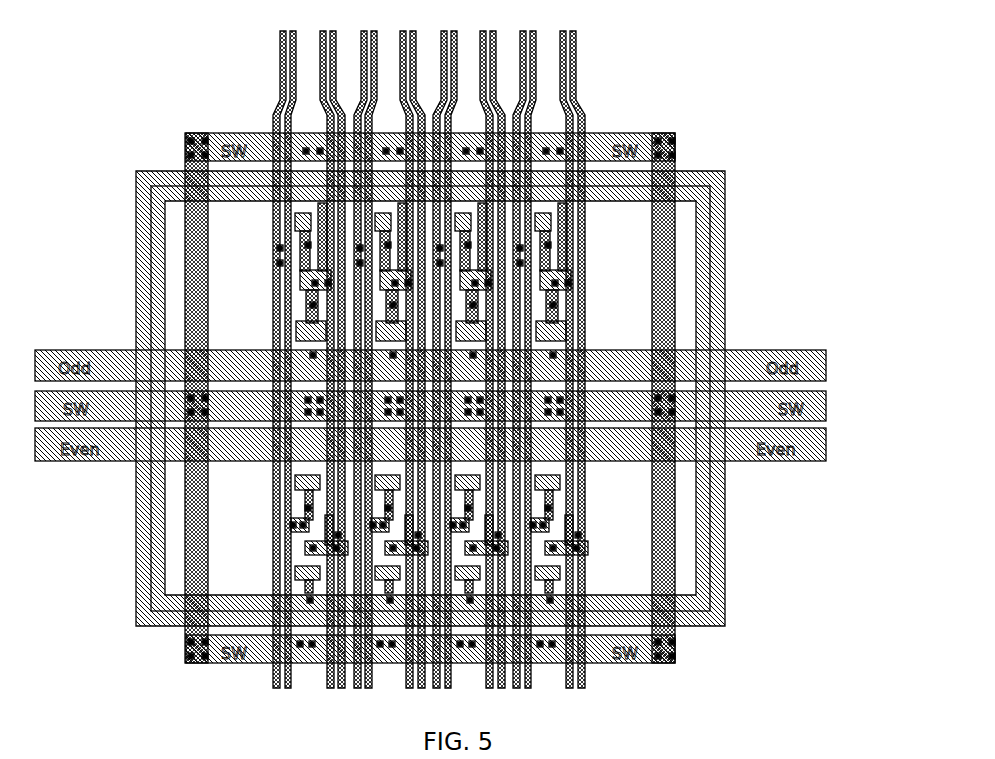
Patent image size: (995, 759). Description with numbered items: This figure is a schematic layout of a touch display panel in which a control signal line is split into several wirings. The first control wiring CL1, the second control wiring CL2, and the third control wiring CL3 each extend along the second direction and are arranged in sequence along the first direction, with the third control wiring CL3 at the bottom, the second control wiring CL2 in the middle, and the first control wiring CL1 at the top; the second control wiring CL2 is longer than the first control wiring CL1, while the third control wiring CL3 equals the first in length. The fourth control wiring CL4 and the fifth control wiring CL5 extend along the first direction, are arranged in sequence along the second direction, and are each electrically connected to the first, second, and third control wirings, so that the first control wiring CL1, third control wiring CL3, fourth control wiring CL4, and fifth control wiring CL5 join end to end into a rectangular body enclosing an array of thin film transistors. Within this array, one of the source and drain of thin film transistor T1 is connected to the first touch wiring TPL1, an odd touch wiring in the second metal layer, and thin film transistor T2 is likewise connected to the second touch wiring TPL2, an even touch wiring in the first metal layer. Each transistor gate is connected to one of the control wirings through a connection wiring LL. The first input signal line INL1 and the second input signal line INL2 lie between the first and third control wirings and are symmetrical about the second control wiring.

The first touch wiring TPL1 is at (275, 87).
The second touch wiring TPL2 is at (285, 52).
The thin film transistor T1 is at (297, 237).
The thin film transistor T2 is at (300, 487).
The connection wiring LL is at (553, 215).
The first control wiring CL1 is at (637, 133).
The second control wiring CL2 is at (810, 405).
The third control wiring CL3 is at (617, 651).
The fourth control wiring CL4 is at (190, 303).
The fifth control wiring CL5 is at (655, 290).
The first input signal line INL1 is at (122, 350).
The second input signal line INL2 is at (137, 540).